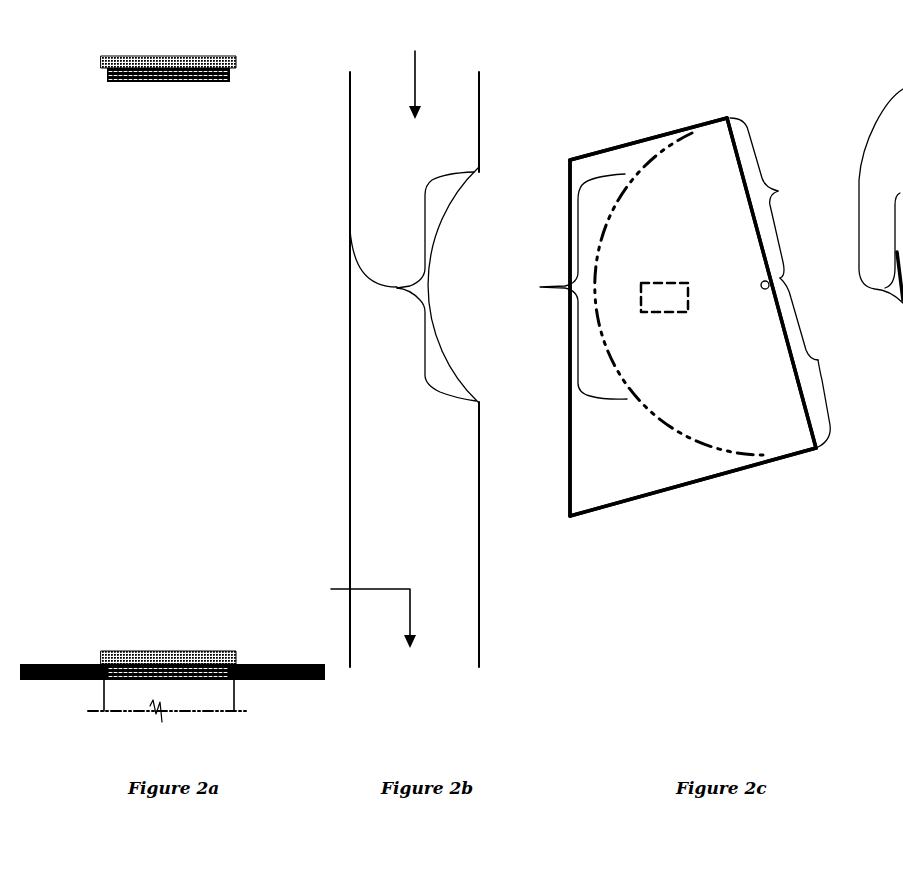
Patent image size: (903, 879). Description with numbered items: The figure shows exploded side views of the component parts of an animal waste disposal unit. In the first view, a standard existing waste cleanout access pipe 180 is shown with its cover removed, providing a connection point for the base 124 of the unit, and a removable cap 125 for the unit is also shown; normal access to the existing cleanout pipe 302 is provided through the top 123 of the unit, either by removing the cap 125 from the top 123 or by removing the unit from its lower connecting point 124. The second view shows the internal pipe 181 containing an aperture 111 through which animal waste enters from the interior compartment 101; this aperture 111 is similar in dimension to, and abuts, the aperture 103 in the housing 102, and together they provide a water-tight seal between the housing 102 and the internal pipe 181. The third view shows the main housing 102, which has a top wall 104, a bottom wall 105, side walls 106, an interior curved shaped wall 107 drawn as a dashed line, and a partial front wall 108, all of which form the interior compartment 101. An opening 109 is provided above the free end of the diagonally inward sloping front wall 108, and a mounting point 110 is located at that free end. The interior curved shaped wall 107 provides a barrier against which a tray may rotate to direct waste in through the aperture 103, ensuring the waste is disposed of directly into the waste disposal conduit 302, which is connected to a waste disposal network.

In FIG. 2C, the interior compartment 101 is at (664, 297).
In FIG. 2C, the housing 102 is at (700, 582).
In FIG. 2C, the aperture 103 is at (540, 287).
In FIG. 2C, the top wall 104 is at (625, 144).
In FIG. 2C, the bottom wall 105 is at (680, 487).
In FIG. 2C, the side walls 106 is at (568, 487).
In FIG. 2C, the interior curved shaped wall 107 is at (623, 382).
In FIG. 2C, the partial front wall 108 is at (818, 360).
In FIG. 2C, the opening 109 is at (778, 191).
In FIG. 2C, the mounting point 110 is at (780, 278).
In FIG. 2B, the aperture 111 is at (351, 245).
In FIG. 2B, the top 123 is at (416, 69).
In FIG. 2B, the base 124 is at (348, 611).
In FIG. 2A, the removable cap 125 is at (190, 82).
In FIG. 2A, the waste cleanout access pipe 180 is at (148, 627).
In FIG. 2B, the internal pipe 181 is at (458, 683).
In FIG. 2A, the cleanout pipe 302 is at (155, 685).